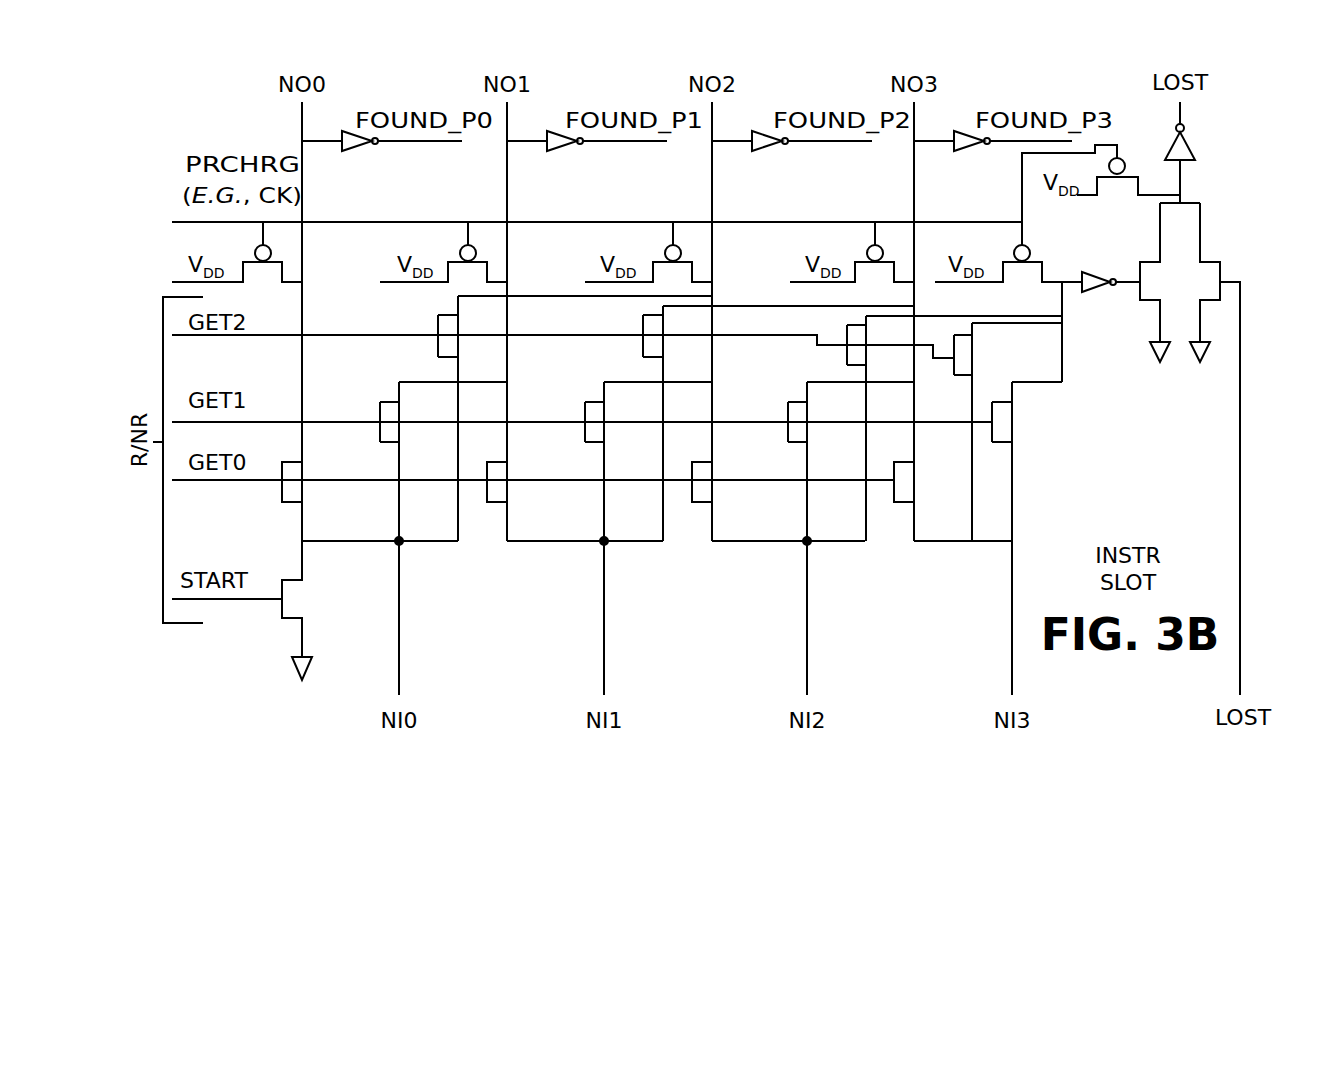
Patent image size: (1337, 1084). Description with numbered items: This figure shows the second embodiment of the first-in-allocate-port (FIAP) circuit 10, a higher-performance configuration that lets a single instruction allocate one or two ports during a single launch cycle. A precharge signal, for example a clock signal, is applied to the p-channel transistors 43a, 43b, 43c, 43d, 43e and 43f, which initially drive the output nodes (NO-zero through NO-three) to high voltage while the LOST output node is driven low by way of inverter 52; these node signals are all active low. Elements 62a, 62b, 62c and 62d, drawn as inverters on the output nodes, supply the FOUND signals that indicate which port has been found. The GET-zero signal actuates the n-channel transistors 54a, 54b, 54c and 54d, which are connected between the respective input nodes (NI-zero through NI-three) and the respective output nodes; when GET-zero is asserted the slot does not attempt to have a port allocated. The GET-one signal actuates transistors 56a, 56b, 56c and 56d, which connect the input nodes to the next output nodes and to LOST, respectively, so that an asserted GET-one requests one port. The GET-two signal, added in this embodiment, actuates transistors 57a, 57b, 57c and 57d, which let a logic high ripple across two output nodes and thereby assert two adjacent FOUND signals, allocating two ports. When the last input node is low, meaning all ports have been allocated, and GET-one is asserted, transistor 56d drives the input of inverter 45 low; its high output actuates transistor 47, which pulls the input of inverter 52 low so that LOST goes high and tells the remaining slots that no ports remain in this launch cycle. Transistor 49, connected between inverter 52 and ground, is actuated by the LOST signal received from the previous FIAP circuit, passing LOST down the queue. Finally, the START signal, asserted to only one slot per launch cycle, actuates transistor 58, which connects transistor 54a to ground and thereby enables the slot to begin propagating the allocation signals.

The FIAP circuit 10 is at (1148, 522).
The PMOSFET 43a is at (283, 279).
The PMOSFET 43b is at (487, 268).
The PMOSFET 43c is at (692, 278).
The PMOSFET 43d is at (855, 264).
The PMOSFET 43e is at (1003, 277).
The PMOSFET 43f is at (1098, 178).
The inverter 45 is at (1093, 270).
The NMOSFET 47 is at (1146, 306).
The NMOSFET 49 is at (1222, 280).
The inverter 52 is at (1189, 140).
The NMOSFET 54a is at (283, 472).
The NMOSFET 54b is at (488, 472).
The NMOSFET 54c is at (693, 472).
The NMOSFET 54d is at (895, 472).
The NMOSFET 56a is at (380, 415).
The NMOSFET 56b is at (585, 415).
The NMOSFET 56c is at (788, 415).
The NMOSFET 56d is at (992, 433).
The NMOSFET 57a is at (438, 347).
The NMOSFET 57b is at (643, 347).
The NMOSFET 57c is at (847, 355).
The NMOSFET 57d is at (960, 368).
The NMOSFET 58 is at (287, 585).
The FOUND_P0 inverter 62a is at (402, 159).
The FOUND_P1 inverter 62b is at (607, 159).
The FOUND_P2 inverter 62c is at (812, 159).
The FOUND_P3 inverter 62d is at (1013, 159).